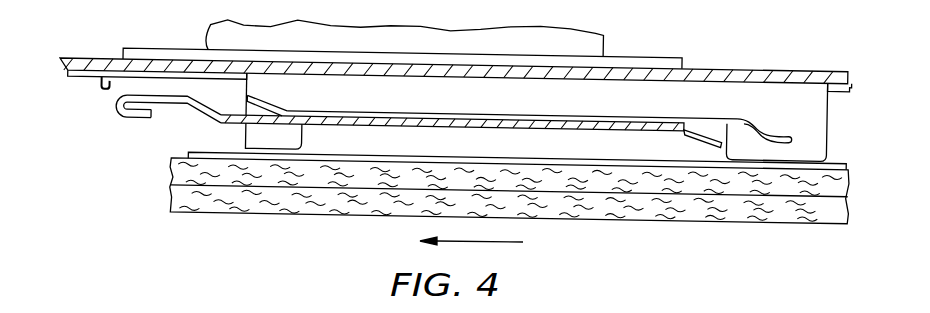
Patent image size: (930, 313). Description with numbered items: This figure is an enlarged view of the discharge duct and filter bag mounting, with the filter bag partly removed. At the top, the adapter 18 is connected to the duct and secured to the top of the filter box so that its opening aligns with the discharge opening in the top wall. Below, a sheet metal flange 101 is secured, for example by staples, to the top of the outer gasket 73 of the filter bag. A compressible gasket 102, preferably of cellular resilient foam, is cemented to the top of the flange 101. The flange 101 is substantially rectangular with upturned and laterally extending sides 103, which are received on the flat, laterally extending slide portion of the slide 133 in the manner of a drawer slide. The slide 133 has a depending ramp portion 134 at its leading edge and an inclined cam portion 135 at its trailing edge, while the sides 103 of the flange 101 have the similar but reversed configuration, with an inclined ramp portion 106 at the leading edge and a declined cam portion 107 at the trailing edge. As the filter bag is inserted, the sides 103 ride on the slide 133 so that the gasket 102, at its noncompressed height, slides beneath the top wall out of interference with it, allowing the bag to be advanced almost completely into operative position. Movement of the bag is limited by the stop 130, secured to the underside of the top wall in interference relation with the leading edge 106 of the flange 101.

The stop 130 is at (87, 72).
The adapter 18 is at (603, 30).
The compressible gasket 102 is at (780, 76).
The inclined ramp portion 106 is at (270, 94).
The inclined cam portion 135 is at (117, 94).
The flange 101 is at (246, 144).
The slide 133 is at (322, 121).
The upturned and laterally extending sides 103 is at (446, 120).
The depending ramp portion 134 is at (688, 126).
The declined cam portion 107 is at (728, 138).
The outer gasket 73 is at (176, 150).